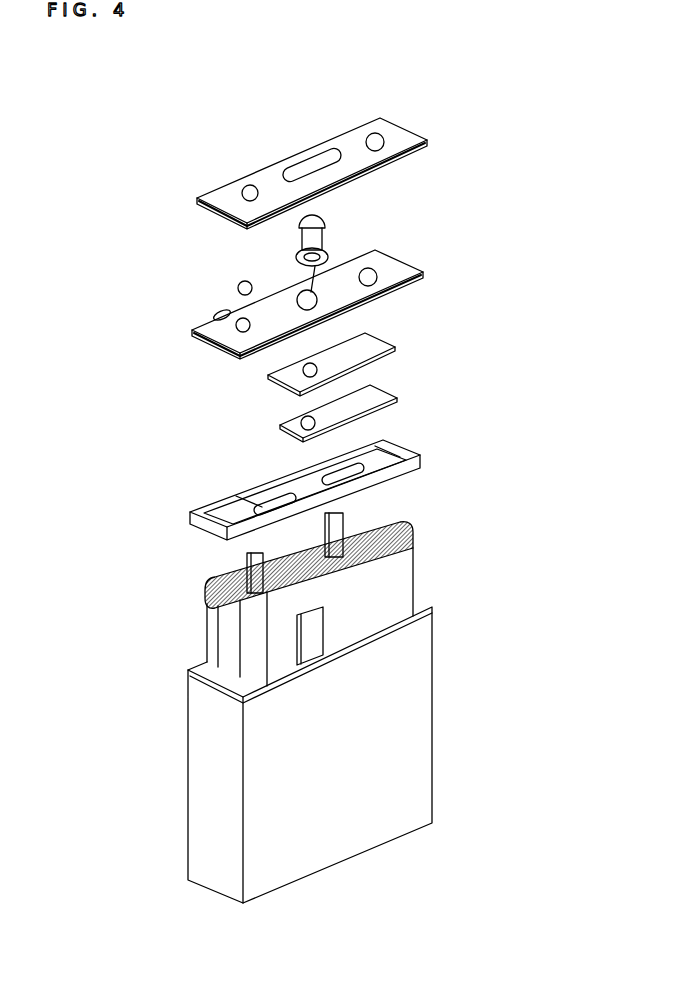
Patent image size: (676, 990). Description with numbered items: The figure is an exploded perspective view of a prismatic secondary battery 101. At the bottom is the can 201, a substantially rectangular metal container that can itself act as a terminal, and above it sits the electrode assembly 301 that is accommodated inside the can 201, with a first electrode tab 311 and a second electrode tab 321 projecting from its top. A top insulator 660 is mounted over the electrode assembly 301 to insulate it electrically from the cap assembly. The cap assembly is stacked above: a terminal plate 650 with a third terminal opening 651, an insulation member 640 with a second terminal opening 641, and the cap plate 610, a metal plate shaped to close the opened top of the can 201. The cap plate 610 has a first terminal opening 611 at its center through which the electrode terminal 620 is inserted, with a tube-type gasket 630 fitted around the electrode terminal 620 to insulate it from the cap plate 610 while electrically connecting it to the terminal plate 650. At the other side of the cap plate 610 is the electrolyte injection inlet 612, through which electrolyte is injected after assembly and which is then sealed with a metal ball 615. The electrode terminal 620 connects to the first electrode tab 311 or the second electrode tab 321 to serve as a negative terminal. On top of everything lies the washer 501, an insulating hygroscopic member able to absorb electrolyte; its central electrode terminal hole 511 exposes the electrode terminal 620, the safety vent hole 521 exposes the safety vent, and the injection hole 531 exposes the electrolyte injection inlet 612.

The secondary battery 101 is at (111, 114).
The can 201 is at (410, 755).
The electrode assembly 301 is at (385, 596).
The first electrode tab 311 is at (246, 565).
The second electrode tab 321 is at (337, 508).
The washer 501 is at (430, 137).
The electrode terminal hole 511 is at (307, 147).
The safety vent hole 521 is at (380, 133).
The injection hole 531 is at (243, 186).
The cap plate 610 is at (430, 275).
The first terminal opening 611 is at (372, 269).
The electrolyte injection inlet 612 is at (190, 333).
The metal ball 615 is at (237, 287).
The electrode terminal 620 is at (323, 208).
The gasket 630 is at (297, 258).
The insulation member 640 is at (397, 347).
The second terminal opening 641 is at (302, 368).
The terminal plate 650 is at (397, 400).
The third terminal opening 651 is at (300, 420).
The top insulator 660 is at (230, 508).